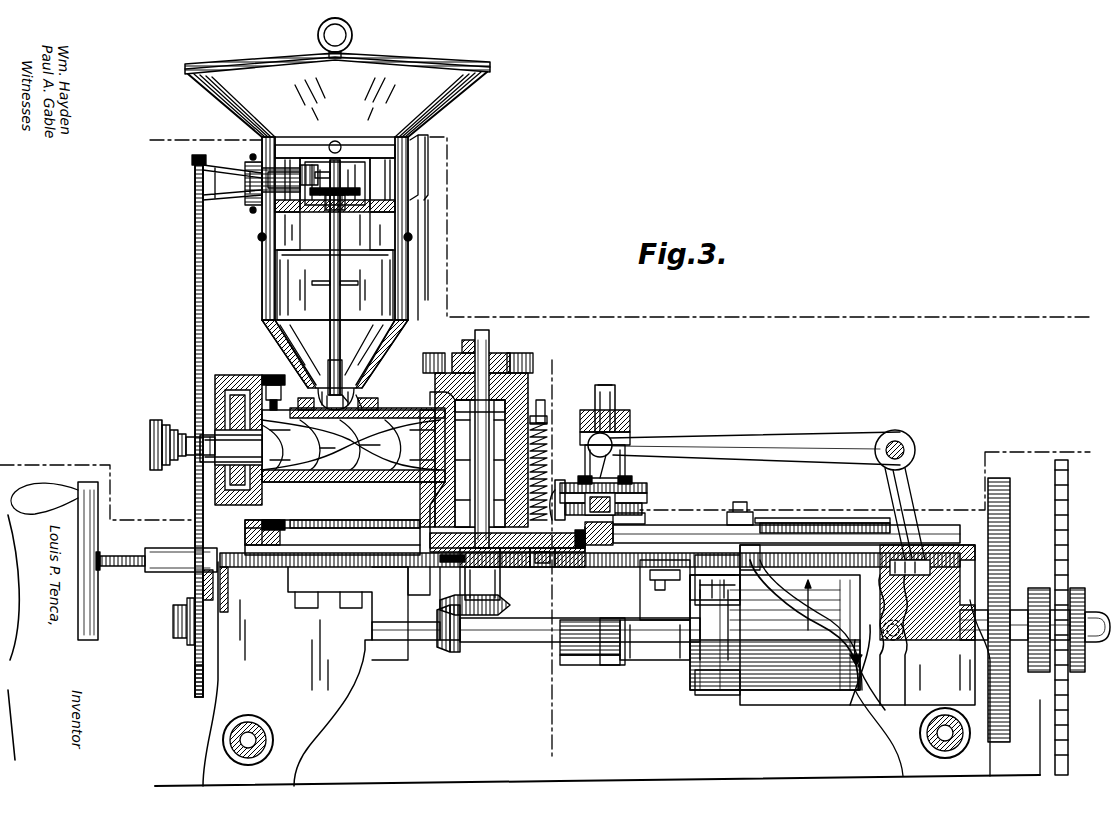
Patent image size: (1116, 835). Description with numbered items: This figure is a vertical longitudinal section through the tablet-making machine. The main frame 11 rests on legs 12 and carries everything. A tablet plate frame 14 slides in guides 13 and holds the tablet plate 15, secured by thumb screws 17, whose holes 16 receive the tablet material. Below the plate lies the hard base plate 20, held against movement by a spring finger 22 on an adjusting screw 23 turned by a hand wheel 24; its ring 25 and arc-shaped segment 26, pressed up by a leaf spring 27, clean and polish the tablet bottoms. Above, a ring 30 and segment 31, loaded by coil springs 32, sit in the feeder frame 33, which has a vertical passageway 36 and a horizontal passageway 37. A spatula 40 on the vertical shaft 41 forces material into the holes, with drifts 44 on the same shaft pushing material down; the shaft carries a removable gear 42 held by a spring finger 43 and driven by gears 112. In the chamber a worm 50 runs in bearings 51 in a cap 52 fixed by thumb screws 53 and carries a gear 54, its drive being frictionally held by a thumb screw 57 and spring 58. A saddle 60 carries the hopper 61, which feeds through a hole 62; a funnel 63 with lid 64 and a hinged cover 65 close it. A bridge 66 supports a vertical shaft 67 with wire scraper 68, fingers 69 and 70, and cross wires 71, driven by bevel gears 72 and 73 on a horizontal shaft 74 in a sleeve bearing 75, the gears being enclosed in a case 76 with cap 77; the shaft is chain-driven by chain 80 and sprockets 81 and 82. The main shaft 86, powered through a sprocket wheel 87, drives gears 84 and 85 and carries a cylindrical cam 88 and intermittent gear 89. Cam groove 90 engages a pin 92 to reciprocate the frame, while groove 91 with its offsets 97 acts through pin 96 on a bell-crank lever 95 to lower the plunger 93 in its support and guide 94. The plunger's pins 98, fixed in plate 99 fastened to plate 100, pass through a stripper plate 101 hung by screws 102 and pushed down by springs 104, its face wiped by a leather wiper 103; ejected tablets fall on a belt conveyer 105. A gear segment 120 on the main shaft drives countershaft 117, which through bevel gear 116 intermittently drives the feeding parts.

The main frame 11 is at (930, 553).
The legs 12 is at (318, 728).
The guides 13 is at (808, 520).
The tablet plate frame 14 is at (690, 528).
The tablet plate 15 is at (392, 525).
The holes 16 is at (428, 506).
The thumb screws 17 is at (260, 526).
The base plate 20 is at (565, 556).
The spring finger 22 is at (445, 575).
The adjusting screw 23 is at (120, 575).
The hand wheel 24 is at (96, 638).
The ring 25 is at (528, 562).
The arc-shaped segment 26 is at (545, 560).
The adjustable leaf spring 27 is at (472, 548).
The ring 30 is at (438, 522).
The segment 31 is at (560, 480).
The coil springs 32 is at (546, 445).
The feeder frame 33 is at (530, 375).
The vertical passageway 36 is at (500, 430).
The horizontal passageway 37 is at (338, 475).
The multi-bladed spatula 40 is at (510, 562).
The vertical shaft 41 is at (483, 330).
The removable gear 42 is at (503, 353).
The spring finger 43 is at (462, 352).
The drifts 44 is at (480, 460).
The worm 50 is at (378, 470).
The bearings 51 is at (215, 394).
The cap 52 is at (256, 378).
The thumb screws 53 is at (273, 380).
The gear 54 is at (232, 380).
The thumb screw 57 is at (152, 438).
The spring 58 is at (187, 462).
The saddle 60 is at (395, 405).
The hopper 61 is at (392, 358).
The hole 62 is at (350, 388).
The removable funnel 63 is at (464, 92).
The removable lid 64 is at (412, 63).
The hinged cover 65 is at (432, 197).
The bridge 66 is at (405, 202).
The vertical shaft 67 is at (343, 303).
The wire scraper 68 is at (398, 258).
The finger 69 is at (360, 395).
The finger 70 is at (326, 383).
The stirrers or cross wires 71 is at (325, 285).
The bevel gear 72 is at (335, 190).
The bevel gear 73 is at (312, 162).
The horizontal shaft 74 is at (192, 180).
The sleeve bearing 75 is at (240, 200).
The case 76 is at (372, 185).
The removable cap 77 is at (350, 150).
The chain 80 is at (195, 253).
The sprocket 81 is at (192, 160).
The sprocket 82 is at (195, 688).
The gear 84 is at (1006, 508).
The gear 85 is at (1006, 585).
The main shaft 86 is at (1092, 615).
The sprocket wheel 87 is at (1062, 540).
The cylindrical cam 88 is at (800, 705).
The intermittent gear 89 is at (700, 640).
The cam groove 90 is at (765, 592).
The cam groove 91 is at (880, 715).
The pin 92 is at (725, 570).
The plunger 93 is at (612, 400).
The support and guide 94 is at (625, 413).
The bell-crank lever 95 is at (740, 440).
The pin 96 is at (905, 630).
The offsets 97 is at (880, 593).
The pins 98 is at (647, 507).
The plate 99 is at (647, 496).
The plate 100 is at (640, 488).
The stripper plate 101 is at (640, 513).
The adjustable screws 102 is at (635, 482).
The leather wiper 103 is at (580, 556).
The springs 104 is at (608, 529).
The belt conveyer 105 is at (592, 656).
The gears 112 is at (532, 352).
The bevel gear 116 is at (458, 655).
The countershaft 117 is at (532, 642).
The gear segment 120 is at (705, 690).